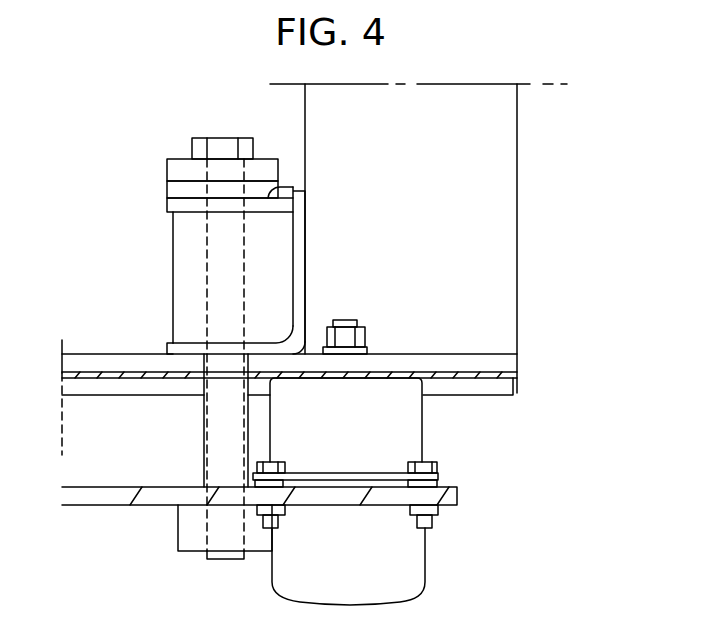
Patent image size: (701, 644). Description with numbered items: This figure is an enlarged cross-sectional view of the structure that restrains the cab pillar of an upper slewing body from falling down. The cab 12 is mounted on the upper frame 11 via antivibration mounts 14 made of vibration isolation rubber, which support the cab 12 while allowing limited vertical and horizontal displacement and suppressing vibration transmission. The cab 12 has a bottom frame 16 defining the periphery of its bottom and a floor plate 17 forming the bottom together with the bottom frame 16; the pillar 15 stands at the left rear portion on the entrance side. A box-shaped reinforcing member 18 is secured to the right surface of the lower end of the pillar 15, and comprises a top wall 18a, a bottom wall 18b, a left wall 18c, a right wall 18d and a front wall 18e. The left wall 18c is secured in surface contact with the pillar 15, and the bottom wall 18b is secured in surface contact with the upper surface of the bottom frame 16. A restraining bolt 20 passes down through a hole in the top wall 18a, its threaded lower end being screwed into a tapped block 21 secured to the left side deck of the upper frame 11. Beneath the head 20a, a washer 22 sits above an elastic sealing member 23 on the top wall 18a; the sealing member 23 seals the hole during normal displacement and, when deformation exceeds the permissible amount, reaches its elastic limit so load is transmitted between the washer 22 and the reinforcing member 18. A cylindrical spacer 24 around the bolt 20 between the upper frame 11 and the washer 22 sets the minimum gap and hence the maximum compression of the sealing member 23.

The upper frame 11 is at (100, 507).
The cab 12 is at (519, 331).
The antivibration mount 14 is at (423, 437).
The pillar 15 is at (517, 224).
The bottom frame 16 is at (101, 353).
The floor plate 17 is at (96, 380).
The reinforcing member 18 is at (239, 301).
The top wall 18a is at (293, 187).
The bottom wall 18b is at (267, 353).
The left wall 18c is at (300, 291).
The right wall 18d is at (173, 233).
The front wall 18e is at (190, 313).
The restraining bolt 20 is at (207, 279).
The head 20a is at (219, 138).
The tapped block 21 is at (193, 552).
The washer 22 is at (183, 158).
The sealing member 23 is at (167, 190).
The spacer 24 is at (204, 437).